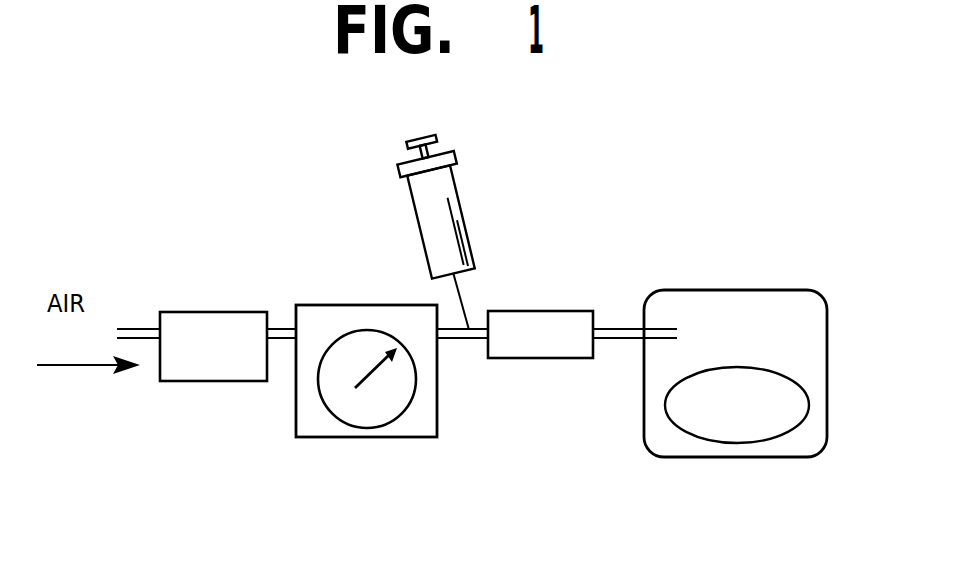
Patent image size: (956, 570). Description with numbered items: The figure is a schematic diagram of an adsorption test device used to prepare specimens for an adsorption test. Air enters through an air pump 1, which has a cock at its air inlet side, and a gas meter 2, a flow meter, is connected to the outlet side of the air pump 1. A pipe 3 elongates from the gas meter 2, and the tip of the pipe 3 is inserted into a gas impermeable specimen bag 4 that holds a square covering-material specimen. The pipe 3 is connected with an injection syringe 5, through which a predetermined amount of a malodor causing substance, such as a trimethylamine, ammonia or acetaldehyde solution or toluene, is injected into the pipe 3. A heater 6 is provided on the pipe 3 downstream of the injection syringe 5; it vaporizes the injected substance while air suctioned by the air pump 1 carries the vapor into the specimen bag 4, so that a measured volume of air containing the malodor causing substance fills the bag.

The air pump 1 is at (173, 383).
The gas meter 2 is at (320, 438).
The pipe 3 is at (453, 339).
The specimen bag 4 is at (705, 458).
The injection syringe 5 is at (468, 230).
The heater 6 is at (512, 358).